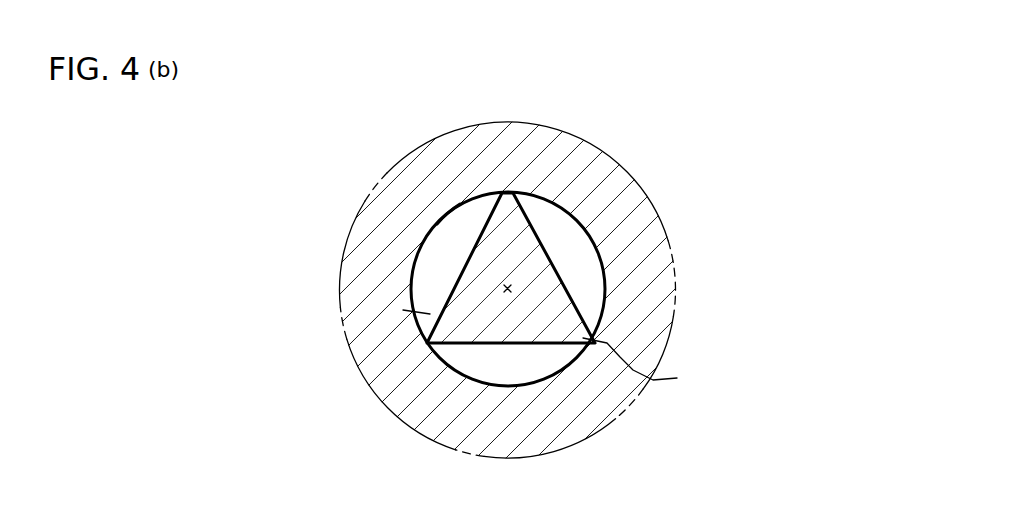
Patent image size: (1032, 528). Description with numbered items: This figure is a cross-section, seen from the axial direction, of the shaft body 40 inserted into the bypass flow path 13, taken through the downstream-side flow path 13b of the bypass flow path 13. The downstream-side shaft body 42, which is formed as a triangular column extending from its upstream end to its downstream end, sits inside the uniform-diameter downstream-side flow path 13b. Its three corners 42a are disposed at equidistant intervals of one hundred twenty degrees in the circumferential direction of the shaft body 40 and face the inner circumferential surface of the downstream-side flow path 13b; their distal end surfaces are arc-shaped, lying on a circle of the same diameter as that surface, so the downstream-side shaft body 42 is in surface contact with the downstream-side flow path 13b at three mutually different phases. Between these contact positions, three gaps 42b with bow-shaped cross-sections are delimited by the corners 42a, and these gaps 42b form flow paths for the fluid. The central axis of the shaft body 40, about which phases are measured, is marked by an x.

The bypass flow path 13 is at (563, 370).
The downstream-side flow path 13b is at (443, 214).
The shaft body 40 is at (407, 300).
The downstream-side shaft body 42 is at (560, 260).
The corners 42a is at (507, 193).
The gaps 42b is at (555, 225).